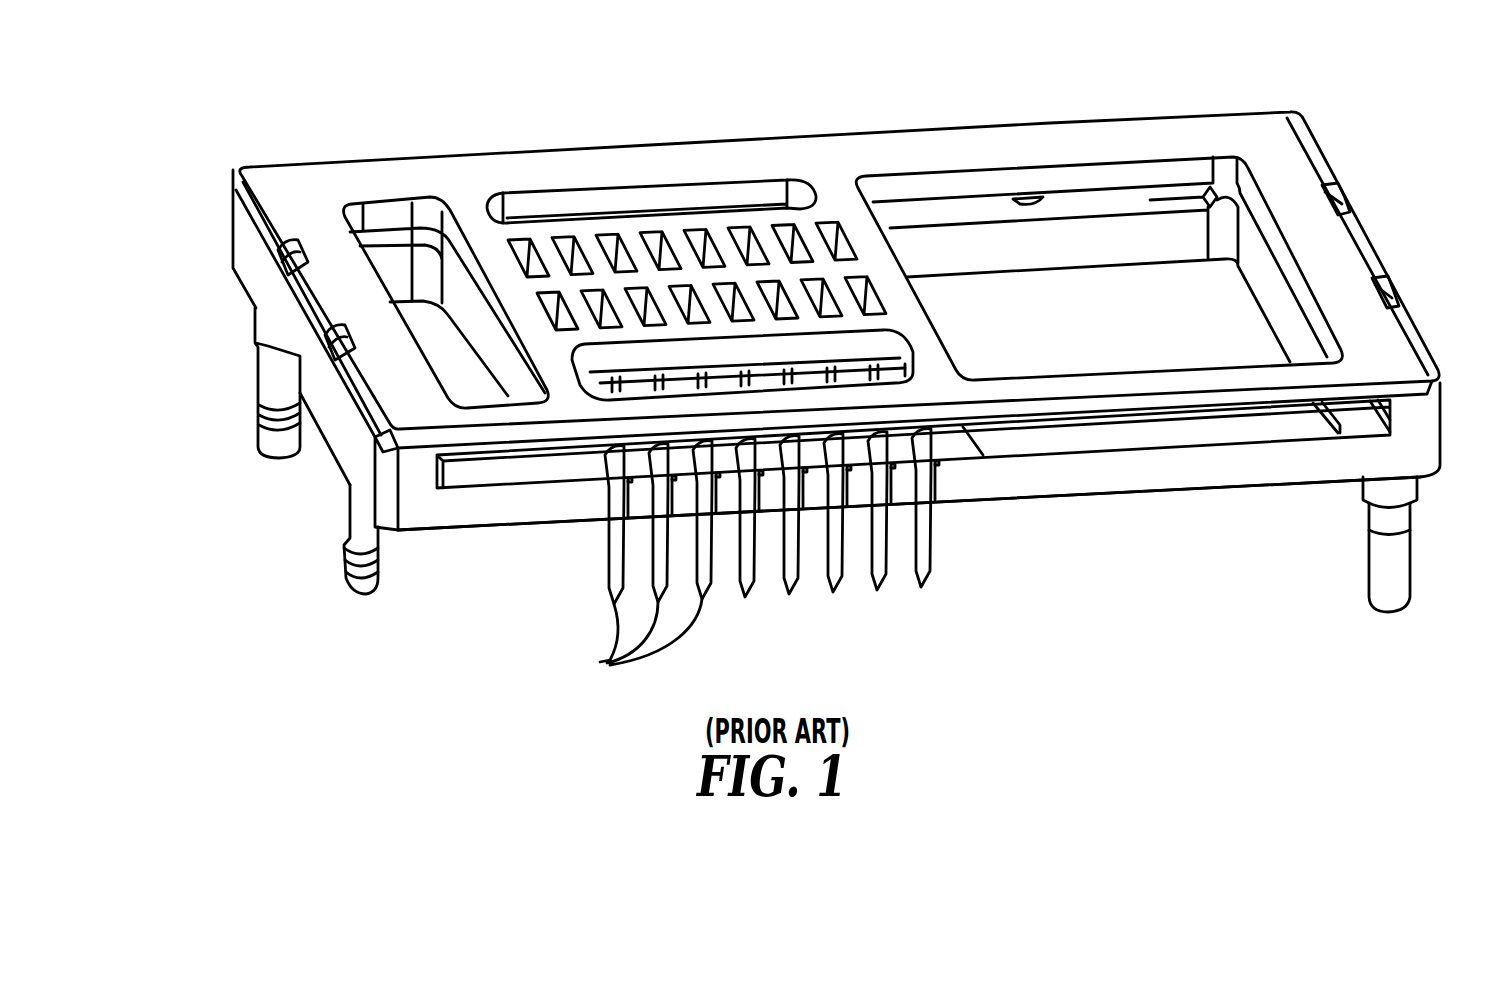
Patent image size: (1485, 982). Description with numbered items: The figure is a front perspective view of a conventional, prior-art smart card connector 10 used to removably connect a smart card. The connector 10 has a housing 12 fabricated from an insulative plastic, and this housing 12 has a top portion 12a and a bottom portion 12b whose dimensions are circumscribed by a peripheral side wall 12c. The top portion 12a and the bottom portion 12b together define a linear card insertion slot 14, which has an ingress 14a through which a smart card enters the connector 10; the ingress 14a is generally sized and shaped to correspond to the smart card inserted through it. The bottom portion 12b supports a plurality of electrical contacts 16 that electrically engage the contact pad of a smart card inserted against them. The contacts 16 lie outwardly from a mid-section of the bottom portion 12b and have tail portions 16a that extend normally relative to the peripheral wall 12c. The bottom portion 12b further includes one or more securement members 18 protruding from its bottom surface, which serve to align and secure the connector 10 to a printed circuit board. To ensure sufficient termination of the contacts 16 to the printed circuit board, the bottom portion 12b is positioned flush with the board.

The smart card connector 10 is at (938, 112).
The housing 12 is at (547, 148).
The top portion 12a is at (390, 177).
The bottom portion 12b is at (572, 498).
The peripheral side wall 12c is at (265, 288).
The card insertion slot 14 is at (1187, 423).
The ingress 14a is at (1288, 413).
The electrical contacts 16 is at (600, 663).
The tail portions 16a is at (925, 533).
The securement members 18 is at (333, 578).